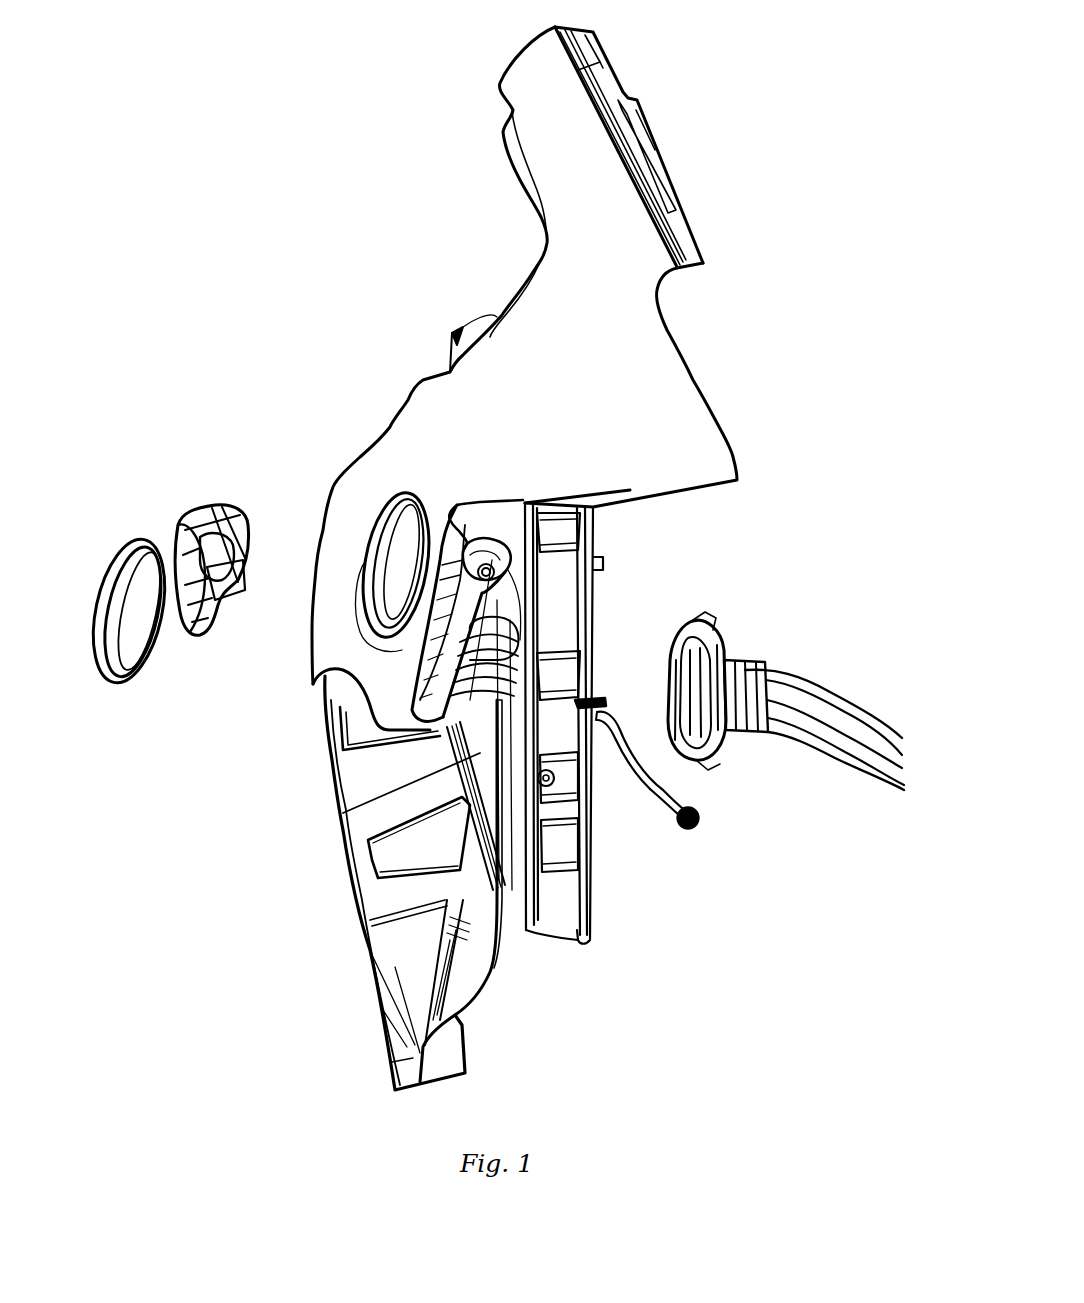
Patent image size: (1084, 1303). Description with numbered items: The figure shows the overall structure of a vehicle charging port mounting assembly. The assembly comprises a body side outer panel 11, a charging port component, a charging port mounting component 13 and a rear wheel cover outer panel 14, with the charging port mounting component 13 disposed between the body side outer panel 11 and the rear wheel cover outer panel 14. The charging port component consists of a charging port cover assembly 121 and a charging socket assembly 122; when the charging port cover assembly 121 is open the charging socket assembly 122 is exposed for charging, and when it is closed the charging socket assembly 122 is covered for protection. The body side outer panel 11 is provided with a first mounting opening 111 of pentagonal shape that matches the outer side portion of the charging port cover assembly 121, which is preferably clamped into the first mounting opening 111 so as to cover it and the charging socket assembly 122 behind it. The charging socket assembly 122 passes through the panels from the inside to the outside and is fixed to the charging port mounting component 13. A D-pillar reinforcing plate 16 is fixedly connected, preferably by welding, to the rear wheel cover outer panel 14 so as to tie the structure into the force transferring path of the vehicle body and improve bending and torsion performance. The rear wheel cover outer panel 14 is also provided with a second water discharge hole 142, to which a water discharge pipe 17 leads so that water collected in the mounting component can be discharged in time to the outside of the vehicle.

The body side outer panel 11 is at (578, 354).
The first mounting opening 111 is at (400, 560).
The charging port mounting component 13 is at (495, 590).
The rear wheel cover outer panel 14 is at (423, 910).
The second water discharge hole 142 is at (553, 785).
The D-pillar reinforcing plate 16 is at (665, 155).
The water discharge pipe 17 is at (657, 785).
The charging port cover assembly 121 is at (135, 605).
The charging socket assembly 122 is at (730, 685).